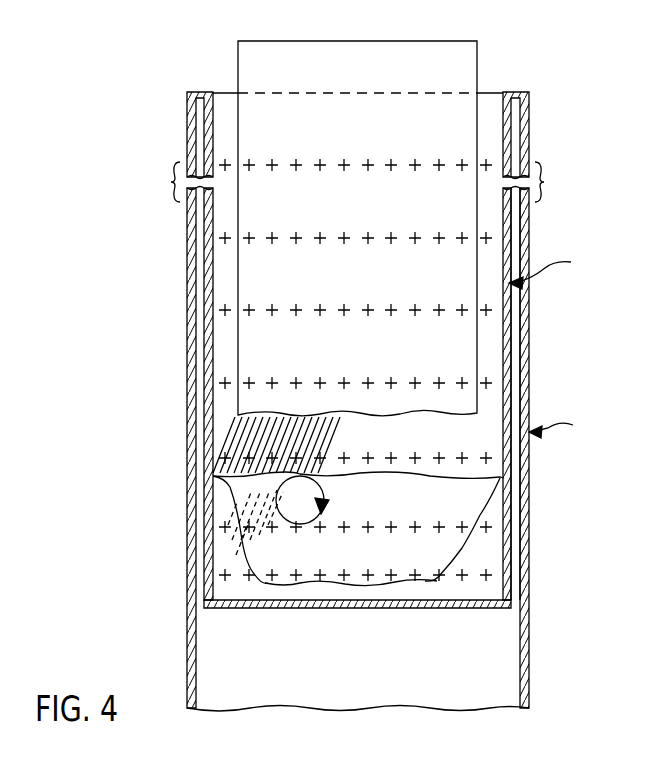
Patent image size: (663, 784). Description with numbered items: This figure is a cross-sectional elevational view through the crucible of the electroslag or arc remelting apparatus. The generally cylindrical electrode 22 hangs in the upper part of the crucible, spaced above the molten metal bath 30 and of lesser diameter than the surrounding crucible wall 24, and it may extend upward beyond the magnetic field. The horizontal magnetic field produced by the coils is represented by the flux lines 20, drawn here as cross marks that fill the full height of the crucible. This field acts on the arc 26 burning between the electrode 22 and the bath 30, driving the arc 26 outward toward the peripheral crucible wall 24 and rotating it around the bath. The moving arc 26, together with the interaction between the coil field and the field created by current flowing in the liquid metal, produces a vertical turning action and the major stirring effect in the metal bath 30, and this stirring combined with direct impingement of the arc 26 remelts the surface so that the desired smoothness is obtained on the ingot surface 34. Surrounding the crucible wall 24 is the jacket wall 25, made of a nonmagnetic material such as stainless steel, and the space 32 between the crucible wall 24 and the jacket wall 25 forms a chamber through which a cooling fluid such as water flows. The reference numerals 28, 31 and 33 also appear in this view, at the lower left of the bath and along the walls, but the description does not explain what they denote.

The flux lines 20 is at (318, 165).
The electrode 22 is at (373, 89).
The crucible wall 24 is at (503, 130).
The jacket wall 25 is at (529, 148).
The arc 26 is at (257, 442).
The flow stream 28 is at (215, 560).
The metal bath 30 is at (445, 514).
The heat flow arrow 31 is at (555, 269).
The space 32 is at (512, 327).
The flow arrow 33 is at (566, 425).
The surface 34 is at (500, 575).